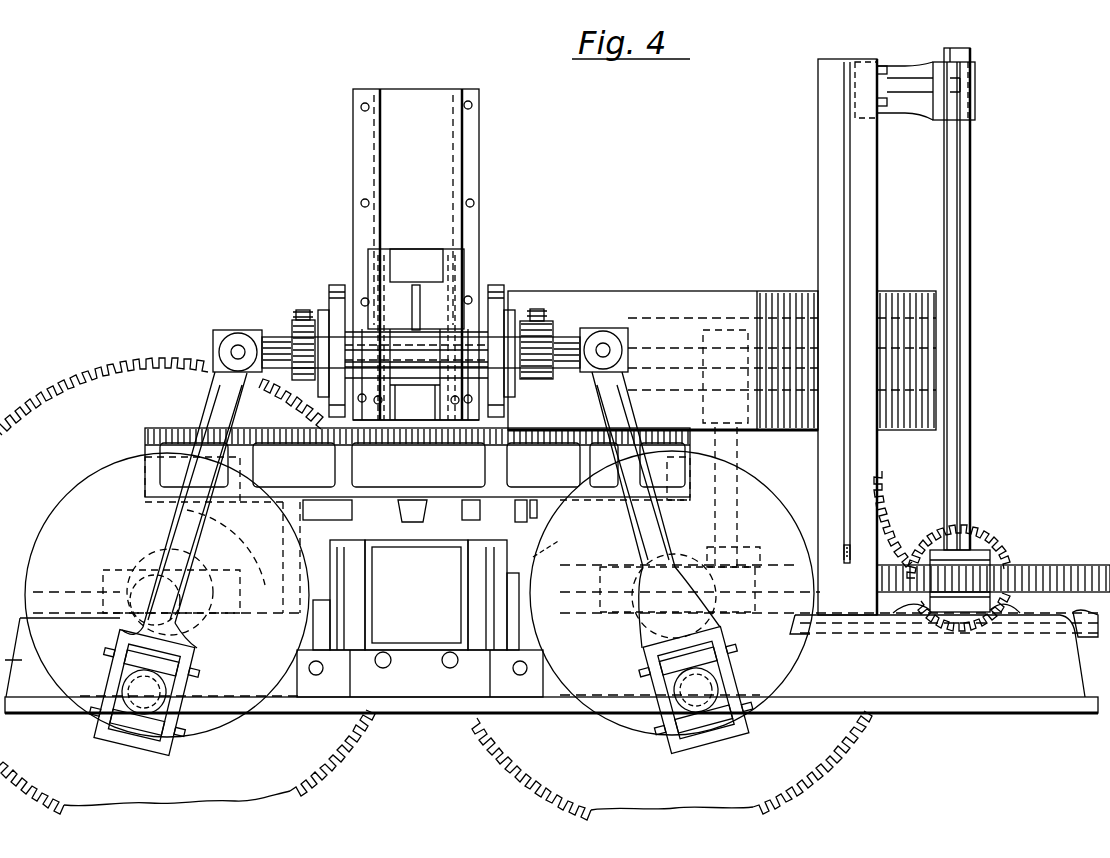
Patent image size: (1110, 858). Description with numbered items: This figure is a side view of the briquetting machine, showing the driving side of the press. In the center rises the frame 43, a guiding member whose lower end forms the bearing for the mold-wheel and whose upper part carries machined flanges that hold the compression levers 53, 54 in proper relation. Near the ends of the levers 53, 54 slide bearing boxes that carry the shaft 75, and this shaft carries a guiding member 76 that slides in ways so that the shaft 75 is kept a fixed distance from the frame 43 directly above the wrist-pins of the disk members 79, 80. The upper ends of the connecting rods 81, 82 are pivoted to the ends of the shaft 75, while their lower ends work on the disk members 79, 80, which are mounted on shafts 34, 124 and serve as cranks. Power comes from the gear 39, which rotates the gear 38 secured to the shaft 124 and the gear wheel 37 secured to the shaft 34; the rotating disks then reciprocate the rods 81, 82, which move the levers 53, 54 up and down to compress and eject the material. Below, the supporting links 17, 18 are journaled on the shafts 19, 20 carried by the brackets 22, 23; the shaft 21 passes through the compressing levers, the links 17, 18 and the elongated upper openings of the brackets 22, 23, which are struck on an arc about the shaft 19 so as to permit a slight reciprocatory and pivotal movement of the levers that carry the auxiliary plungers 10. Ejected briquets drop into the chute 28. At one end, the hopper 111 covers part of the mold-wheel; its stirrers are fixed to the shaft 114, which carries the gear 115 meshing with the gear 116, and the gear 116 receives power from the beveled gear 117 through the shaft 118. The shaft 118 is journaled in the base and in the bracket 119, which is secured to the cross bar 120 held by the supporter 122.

The plunger 10 is at (380, 527).
The supporting link 17 is at (527, 555).
The supporting link 18 is at (327, 519).
The shaft 19 is at (520, 637).
The shaft 20 is at (302, 646).
The shaft 21 is at (535, 558).
The bracket 22 is at (487, 595).
The bracket 23 is at (345, 602).
The chute 28 is at (416, 595).
The shaft 34 is at (150, 590).
The gear wheel 37 is at (108, 366).
The gear 38 is at (893, 498).
The gear 39 is at (1000, 567).
The frame 43 is at (419, 93).
The compression lever 53 is at (502, 290).
The compression lever 54 is at (333, 288).
The shaft 75 is at (572, 338).
The guiding member 76 is at (421, 344).
The disk member 79 is at (167, 595).
The disk member 80 is at (815, 581).
The connecting rod 81 is at (215, 386).
The connecting rod 82 is at (636, 386).
The hopper 111 is at (709, 300).
The shaft 114 is at (738, 456).
The gear 115 is at (813, 552).
The gear 116 is at (993, 567).
The beveled gear 117 is at (1085, 622).
The shaft 118 is at (970, 502).
The bracket 119 is at (975, 96).
The cross bar 120 is at (887, 68).
The supporter 122 is at (818, 196).
The shaft 124 is at (650, 608).